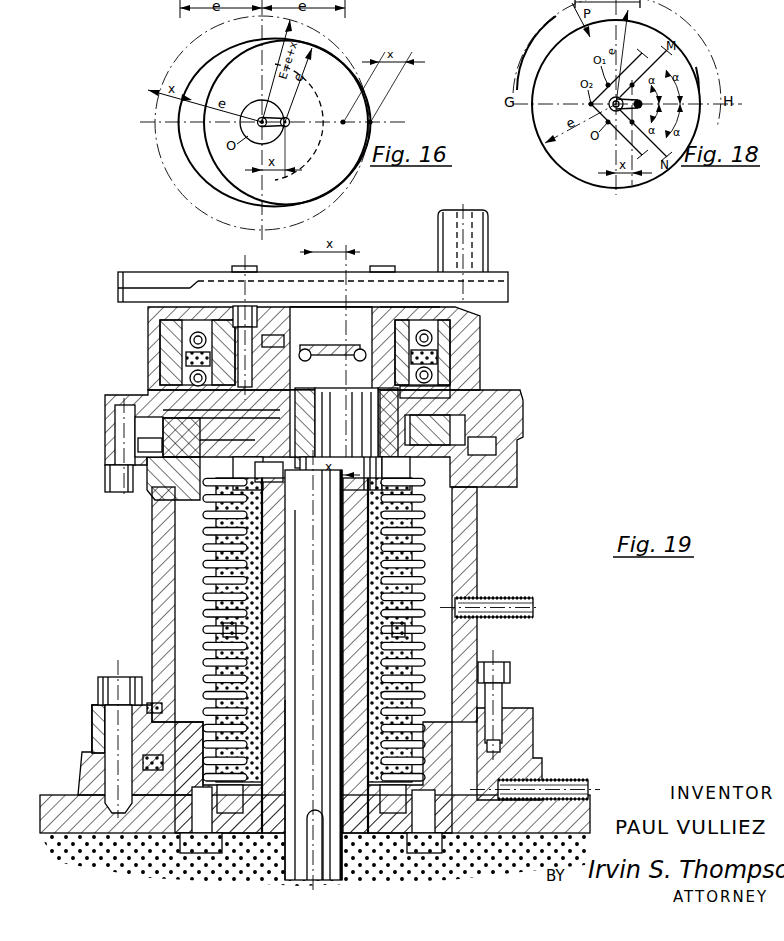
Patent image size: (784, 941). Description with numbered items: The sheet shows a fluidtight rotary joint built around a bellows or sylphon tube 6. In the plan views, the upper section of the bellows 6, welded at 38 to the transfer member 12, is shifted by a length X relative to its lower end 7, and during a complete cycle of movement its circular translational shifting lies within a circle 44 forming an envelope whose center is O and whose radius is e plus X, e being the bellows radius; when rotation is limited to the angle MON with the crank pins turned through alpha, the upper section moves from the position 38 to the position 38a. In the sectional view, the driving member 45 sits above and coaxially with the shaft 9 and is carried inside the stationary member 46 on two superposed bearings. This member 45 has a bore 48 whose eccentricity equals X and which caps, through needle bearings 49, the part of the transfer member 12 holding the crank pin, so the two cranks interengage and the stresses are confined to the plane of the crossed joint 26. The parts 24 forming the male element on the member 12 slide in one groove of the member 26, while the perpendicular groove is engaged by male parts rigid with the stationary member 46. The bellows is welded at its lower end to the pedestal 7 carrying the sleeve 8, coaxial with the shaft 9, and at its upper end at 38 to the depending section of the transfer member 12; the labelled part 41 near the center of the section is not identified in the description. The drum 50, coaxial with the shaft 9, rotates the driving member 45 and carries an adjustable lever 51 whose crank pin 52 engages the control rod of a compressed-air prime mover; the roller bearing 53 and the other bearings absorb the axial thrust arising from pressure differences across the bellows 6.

In FIG. 19, the bellows 6 is at (426, 543).
In FIG. 16, the lower end of the bellows 7 is at (208, 58).
In FIG. 19, the lower end of the bellows 7 is at (526, 716).
In FIG. 19, the guiding member 8 is at (277, 735).
In FIG. 19, the shaft 9 is at (302, 565).
In FIG. 19, the transfer member 12 is at (455, 447).
In FIG. 19, the male projecting parts 24 is at (245, 429).
In FIG. 19, the crossed joint 26 is at (190, 419).
In FIG. 16, the upper end of the bellows 38 is at (337, 57).
In FIG. 18, the upper end of the bellows 38 is at (535, 91).
In FIG. 19, the upper end of the bellows 38 is at (269, 472).
In FIG. 18, the shifted position of the upper bellows section 38a is at (527, 65).
In FIG. 19, the eccentric shaft 41 is at (338, 425).
In FIG. 16, the envelope circle 44 is at (168, 70).
In FIG. 19, the driving member 45 is at (282, 308).
In FIG. 19, the stationary member 46 is at (455, 360).
In FIG. 19, the eccentric bore 48 is at (272, 350).
In FIG. 19, the needle bearings 49 is at (447, 396).
In FIG. 19, the drum 50 is at (418, 309).
In FIG. 19, the adjustable lever 51 is at (214, 273).
In FIG. 19, the crank pin 52 is at (452, 230).
In FIG. 19, the roller bearing 53 is at (414, 315).